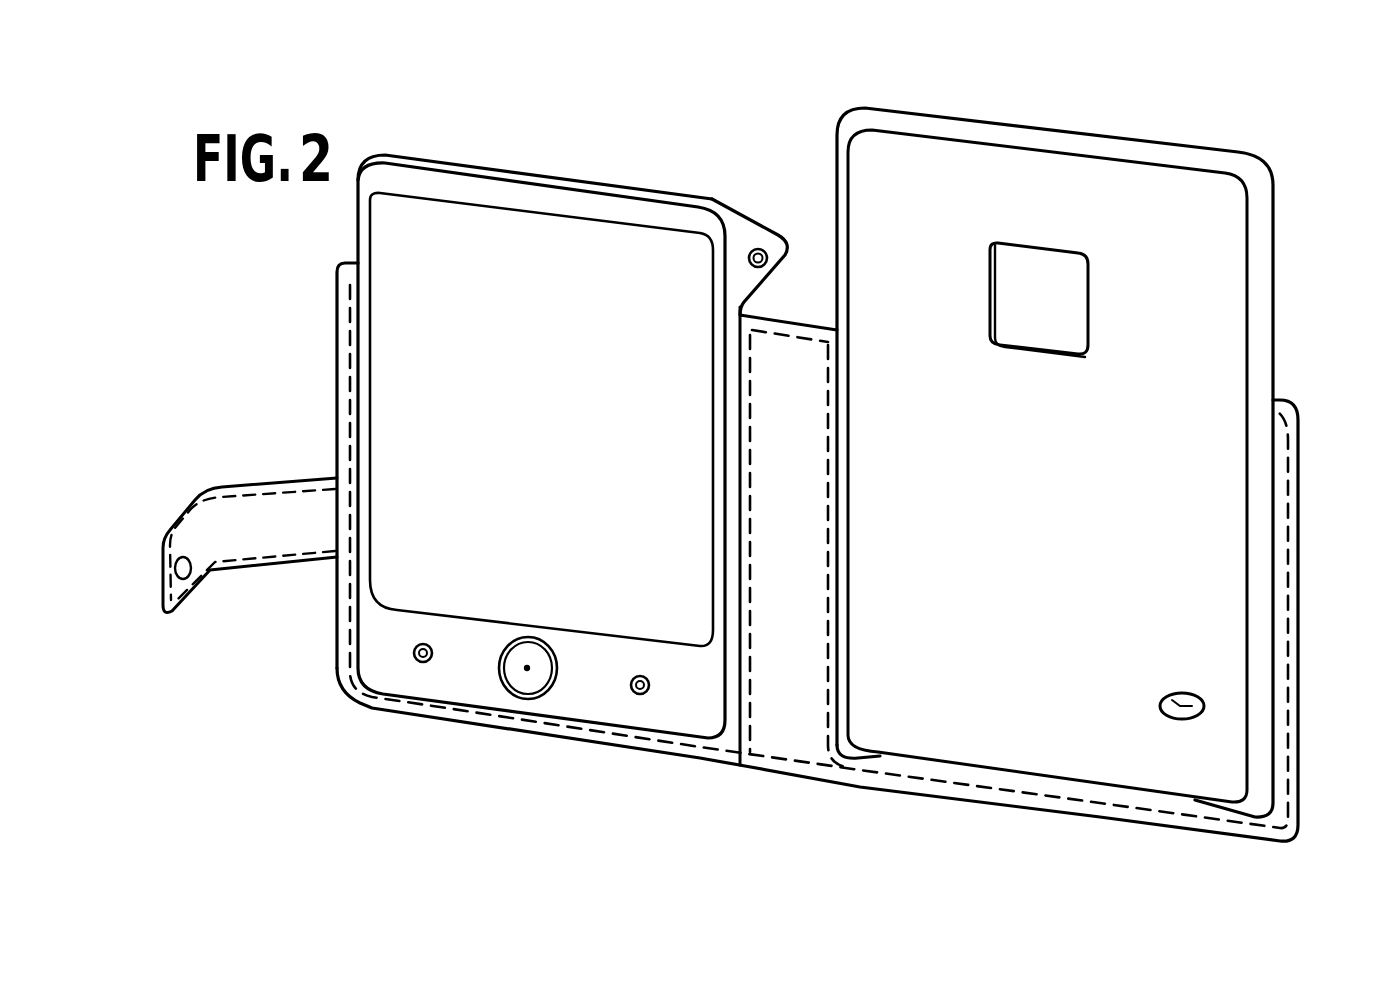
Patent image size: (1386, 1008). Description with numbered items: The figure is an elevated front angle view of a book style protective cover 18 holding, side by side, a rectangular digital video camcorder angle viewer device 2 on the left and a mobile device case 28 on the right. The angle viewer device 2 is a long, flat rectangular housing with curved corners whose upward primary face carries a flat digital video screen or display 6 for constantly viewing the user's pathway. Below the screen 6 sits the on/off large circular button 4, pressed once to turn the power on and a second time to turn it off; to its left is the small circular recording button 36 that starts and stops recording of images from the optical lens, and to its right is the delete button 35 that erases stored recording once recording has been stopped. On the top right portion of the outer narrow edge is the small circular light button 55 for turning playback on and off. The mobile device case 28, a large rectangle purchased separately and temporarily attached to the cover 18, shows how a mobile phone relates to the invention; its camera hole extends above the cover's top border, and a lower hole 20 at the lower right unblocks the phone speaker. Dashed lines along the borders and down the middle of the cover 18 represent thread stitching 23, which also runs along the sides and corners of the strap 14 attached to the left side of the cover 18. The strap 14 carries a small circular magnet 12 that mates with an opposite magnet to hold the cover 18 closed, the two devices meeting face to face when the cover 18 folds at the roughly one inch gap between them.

The digital video camcorder angle viewer device 2 is at (698, 675).
The on/off large circular button 4 is at (527, 678).
The digital video screen or display 6 is at (503, 240).
The small circular magnet 12 is at (192, 570).
The strap 14 is at (283, 527).
The book style protective cover 18 is at (1293, 838).
The lower hole 20 is at (1203, 705).
The thread stitching 23 is at (352, 318).
The mobile device case 28 is at (1263, 242).
The delete button 35 is at (636, 695).
The small circular recording button 36 is at (423, 663).
The small circular light button 55 is at (768, 254).